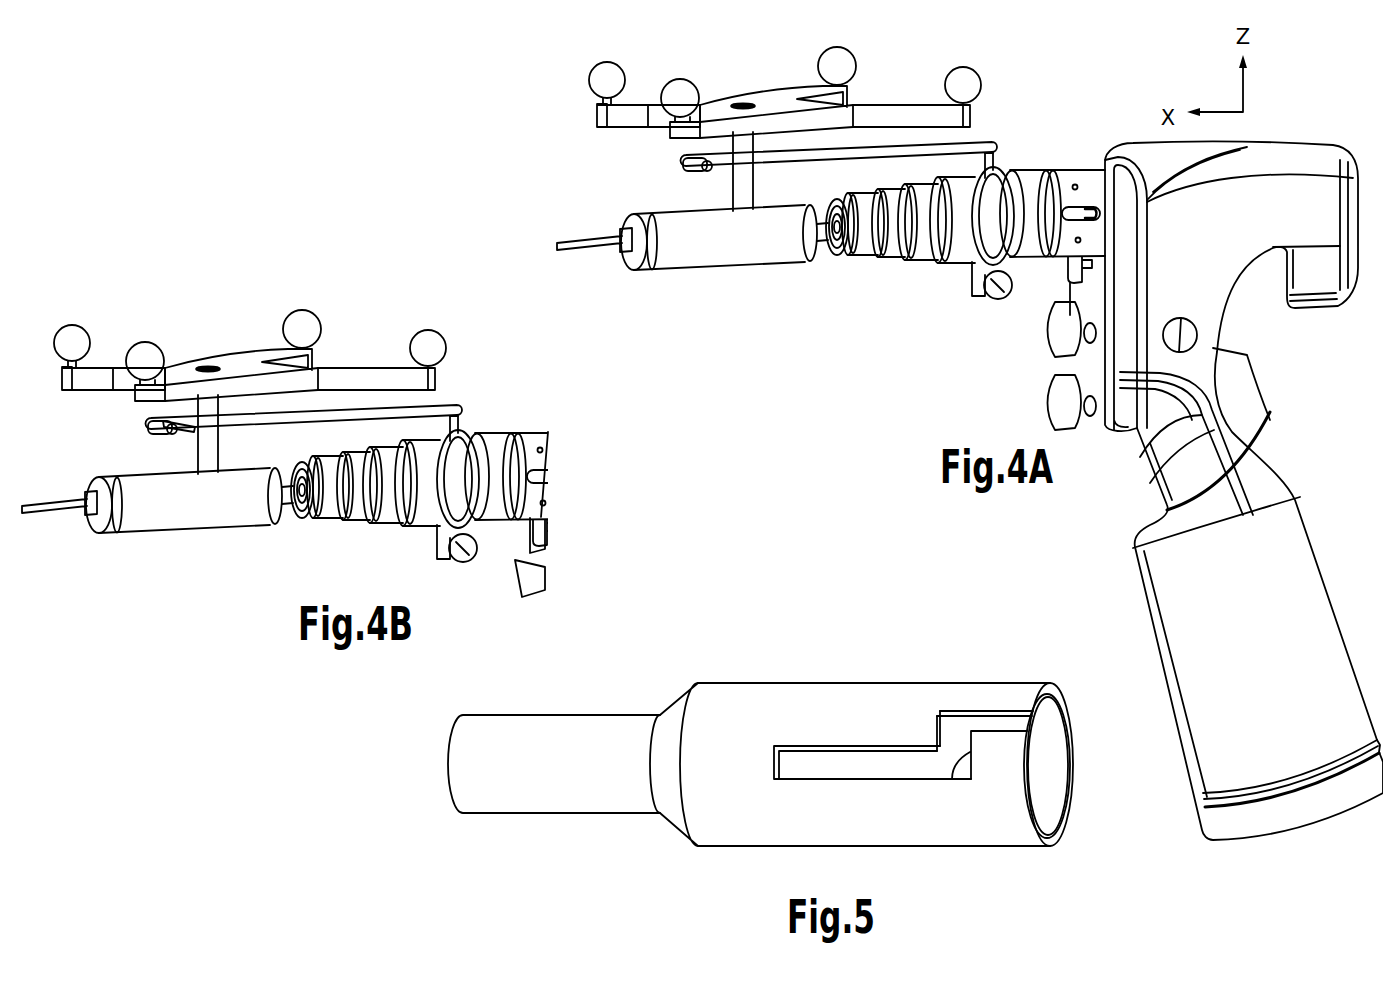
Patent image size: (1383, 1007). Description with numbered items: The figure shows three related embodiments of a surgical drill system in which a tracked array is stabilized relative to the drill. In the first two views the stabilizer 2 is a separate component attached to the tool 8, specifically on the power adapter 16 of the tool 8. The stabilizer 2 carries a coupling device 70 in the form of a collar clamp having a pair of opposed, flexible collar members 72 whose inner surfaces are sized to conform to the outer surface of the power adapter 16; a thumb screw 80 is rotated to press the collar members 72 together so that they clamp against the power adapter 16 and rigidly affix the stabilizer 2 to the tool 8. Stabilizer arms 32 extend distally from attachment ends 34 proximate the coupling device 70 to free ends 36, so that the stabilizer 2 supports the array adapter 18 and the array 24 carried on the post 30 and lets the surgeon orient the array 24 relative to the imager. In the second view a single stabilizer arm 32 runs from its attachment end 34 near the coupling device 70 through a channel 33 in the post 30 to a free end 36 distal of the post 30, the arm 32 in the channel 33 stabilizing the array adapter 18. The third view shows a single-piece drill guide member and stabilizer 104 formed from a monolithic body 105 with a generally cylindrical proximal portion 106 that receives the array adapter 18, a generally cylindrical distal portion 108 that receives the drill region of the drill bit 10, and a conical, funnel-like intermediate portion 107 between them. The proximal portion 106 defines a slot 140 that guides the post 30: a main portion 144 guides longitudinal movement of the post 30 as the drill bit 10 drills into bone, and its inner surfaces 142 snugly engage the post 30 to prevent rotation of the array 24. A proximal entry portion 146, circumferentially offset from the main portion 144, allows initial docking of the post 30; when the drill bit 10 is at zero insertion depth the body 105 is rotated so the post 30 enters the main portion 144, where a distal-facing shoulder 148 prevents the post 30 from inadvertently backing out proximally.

In FIG. 4A, the stabilizer 2 is at (1017, 135).
In FIG. 4B, the stabilizer 2 is at (482, 398).
In FIG. 4A, the tool 8 is at (1296, 320).
In FIG. 4A, the drill bit 10 is at (622, 248).
In FIG. 4B, the drill bit 10 is at (72, 512).
In FIG. 4A, the power adapter 16 is at (1028, 206).
In FIG. 4A, the array adapter 18 is at (749, 264).
In FIG. 4B, the array adapter 18 is at (214, 527).
In FIG. 4A, the array 24 is at (736, 88).
In FIG. 4B, the array 24 is at (200, 351).
In FIG. 4A, the post 30 is at (735, 186).
In FIG. 4B, the post 30 is at (200, 449).
In FIG. 4A, the stabilizer arm 32 is at (878, 150).
In FIG. 4B, the stabilizer arm 32 is at (343, 412).
In FIG. 4B, the channel 33 is at (185, 433).
In FIG. 4A, the attachment end 34 is at (993, 141).
In FIG. 4B, the attachment end 34 is at (458, 404).
In FIG. 4A, the free end 36 is at (683, 167).
In FIG. 4B, the free end 36 is at (150, 428).
In FIG. 4A, the coupling device 70 is at (946, 277).
In FIG. 4A, the collar members 72 is at (1011, 236).
In FIG. 4A, the thumb screw 80 is at (990, 287).
In FIG. 5, the single-piece drill guide member and stabilizer 104 is at (745, 658).
In FIG. 5, the monolithic body 105 is at (1050, 841).
In FIG. 5, the proximal portion 106 is at (795, 850).
In FIG. 5, the intermediate portion 107 is at (681, 830).
In FIG. 5, the distal portion 108 is at (630, 814).
In FIG. 5, the slot 140 is at (825, 763).
In FIG. 5, the inner surfaces 142 is at (903, 779).
In FIG. 5, the main portion 144 is at (860, 780).
In FIG. 5, the proximal entry portion 146 is at (997, 707).
In FIG. 5, the distal-facing shoulder 148 is at (967, 757).